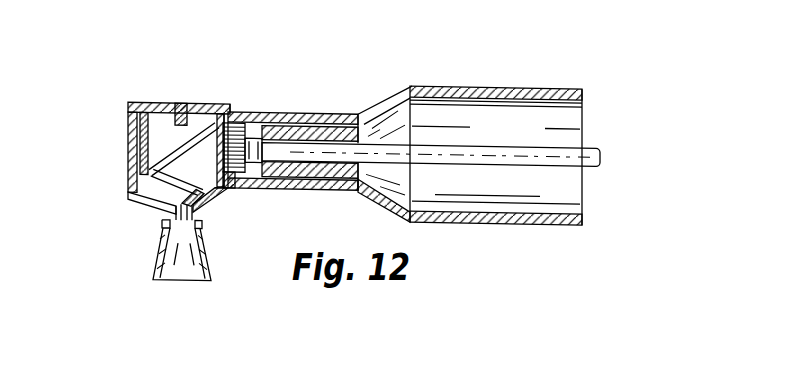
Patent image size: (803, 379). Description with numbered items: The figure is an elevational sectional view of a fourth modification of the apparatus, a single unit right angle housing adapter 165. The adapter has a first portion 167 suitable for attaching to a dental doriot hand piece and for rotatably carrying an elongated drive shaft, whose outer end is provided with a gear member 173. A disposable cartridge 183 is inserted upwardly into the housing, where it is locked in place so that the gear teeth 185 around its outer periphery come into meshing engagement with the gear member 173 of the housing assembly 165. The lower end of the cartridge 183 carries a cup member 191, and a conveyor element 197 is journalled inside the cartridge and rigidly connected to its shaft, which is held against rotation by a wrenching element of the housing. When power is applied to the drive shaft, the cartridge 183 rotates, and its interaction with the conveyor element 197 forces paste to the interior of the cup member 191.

The right angle housing adapter 165 is at (360, 90).
The first portion 167 is at (385, 96).
The gear member 173 is at (240, 121).
The disposable cartridge 183 is at (139, 118).
The gear teeth 185 is at (141, 171).
The cup member 191 is at (158, 249).
The conveyor element 197 is at (227, 182).